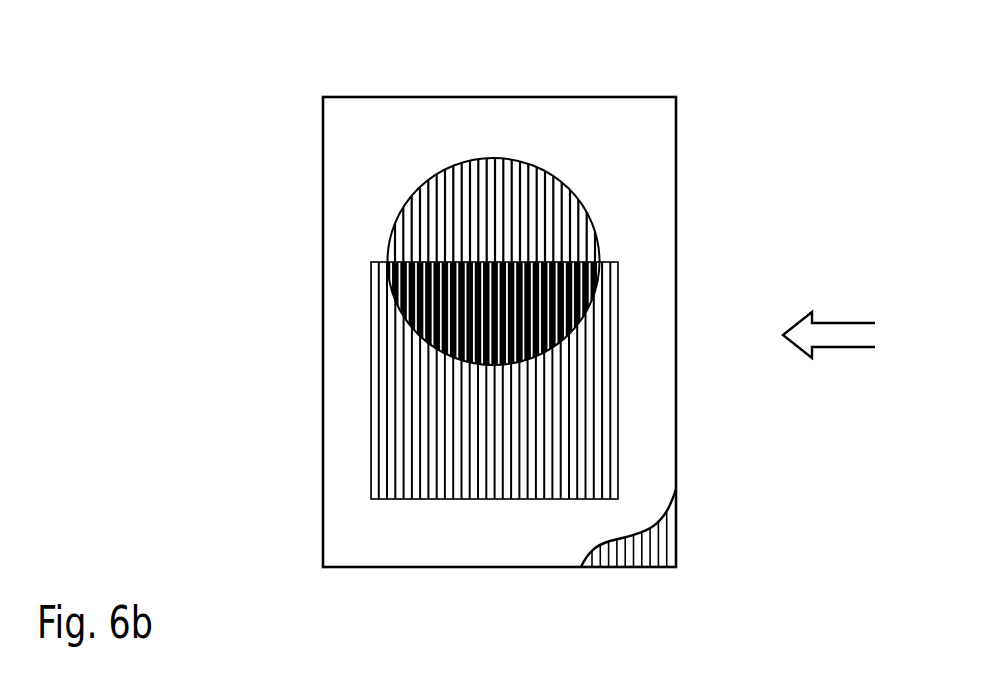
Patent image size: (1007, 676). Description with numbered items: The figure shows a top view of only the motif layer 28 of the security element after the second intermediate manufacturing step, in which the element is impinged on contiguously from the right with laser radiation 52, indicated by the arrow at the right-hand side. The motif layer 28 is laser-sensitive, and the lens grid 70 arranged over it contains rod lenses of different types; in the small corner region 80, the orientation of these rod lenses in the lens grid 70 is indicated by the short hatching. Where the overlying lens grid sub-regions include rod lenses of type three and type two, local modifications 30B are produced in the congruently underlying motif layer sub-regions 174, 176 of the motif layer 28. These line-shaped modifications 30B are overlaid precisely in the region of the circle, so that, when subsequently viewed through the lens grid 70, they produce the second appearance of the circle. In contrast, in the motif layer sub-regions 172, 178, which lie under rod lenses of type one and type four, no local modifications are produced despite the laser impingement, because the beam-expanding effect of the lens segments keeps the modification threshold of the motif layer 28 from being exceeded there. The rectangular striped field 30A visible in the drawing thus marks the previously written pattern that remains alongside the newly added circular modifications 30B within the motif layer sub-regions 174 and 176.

The motif layer 28 is at (658, 125).
The local modifications 30B is at (493, 158).
The rectangular pattern region 30A is at (447, 499).
The motif layer sub-region 174 is at (412, 238).
The motif layer sub-region 176 is at (393, 294).
The motif layer sub-region 172 is at (392, 383).
The motif layer sub-region 178 is at (340, 520).
The lens grid 70 is at (658, 567).
The region 80 is at (670, 502).
The laser radiation 52 is at (845, 323).